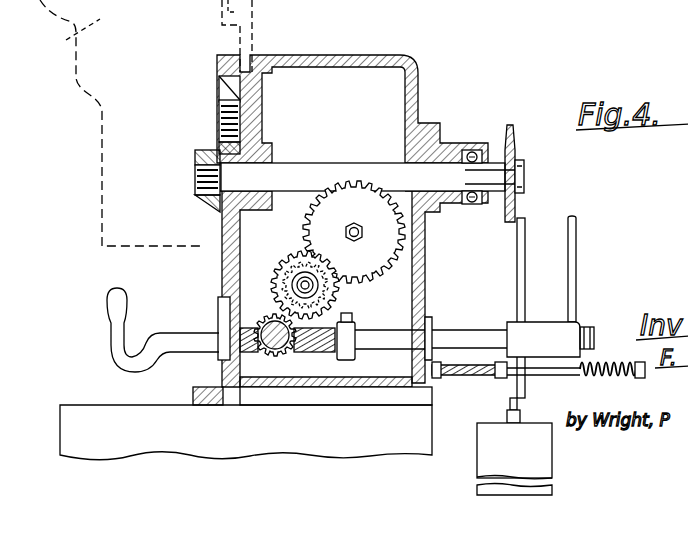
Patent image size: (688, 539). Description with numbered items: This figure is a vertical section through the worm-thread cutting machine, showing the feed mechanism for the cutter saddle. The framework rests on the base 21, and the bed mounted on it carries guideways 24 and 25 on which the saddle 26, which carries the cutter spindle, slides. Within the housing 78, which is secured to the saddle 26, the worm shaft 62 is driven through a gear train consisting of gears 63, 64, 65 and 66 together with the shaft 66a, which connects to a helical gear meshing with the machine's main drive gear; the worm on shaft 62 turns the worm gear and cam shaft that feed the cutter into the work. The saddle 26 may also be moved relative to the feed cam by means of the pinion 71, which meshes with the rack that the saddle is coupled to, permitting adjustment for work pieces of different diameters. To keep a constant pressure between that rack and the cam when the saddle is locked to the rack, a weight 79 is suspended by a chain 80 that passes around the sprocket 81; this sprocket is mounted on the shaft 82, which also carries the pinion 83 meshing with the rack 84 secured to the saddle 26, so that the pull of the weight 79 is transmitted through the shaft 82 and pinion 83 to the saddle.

The base 21 is at (163, 436).
The guideway 24 is at (202, 205).
The guideway 25 is at (226, 56).
The saddle 26 is at (66, 40).
The shaft 62 is at (360, 216).
The gear 63 is at (391, 250).
The gear 64 is at (291, 252).
The gear 65 is at (278, 276).
The gear 66 is at (262, 316).
The shaft 66a is at (275, 336).
The pinion 71 is at (222, 97).
The housing 78 is at (220, 147).
The weight 79 is at (500, 466).
The chain 80 is at (510, 276).
The sprocket 81 is at (512, 148).
The shaft 82 is at (323, 179).
The pinion 83 is at (200, 170).
The rack 84 is at (205, 151).